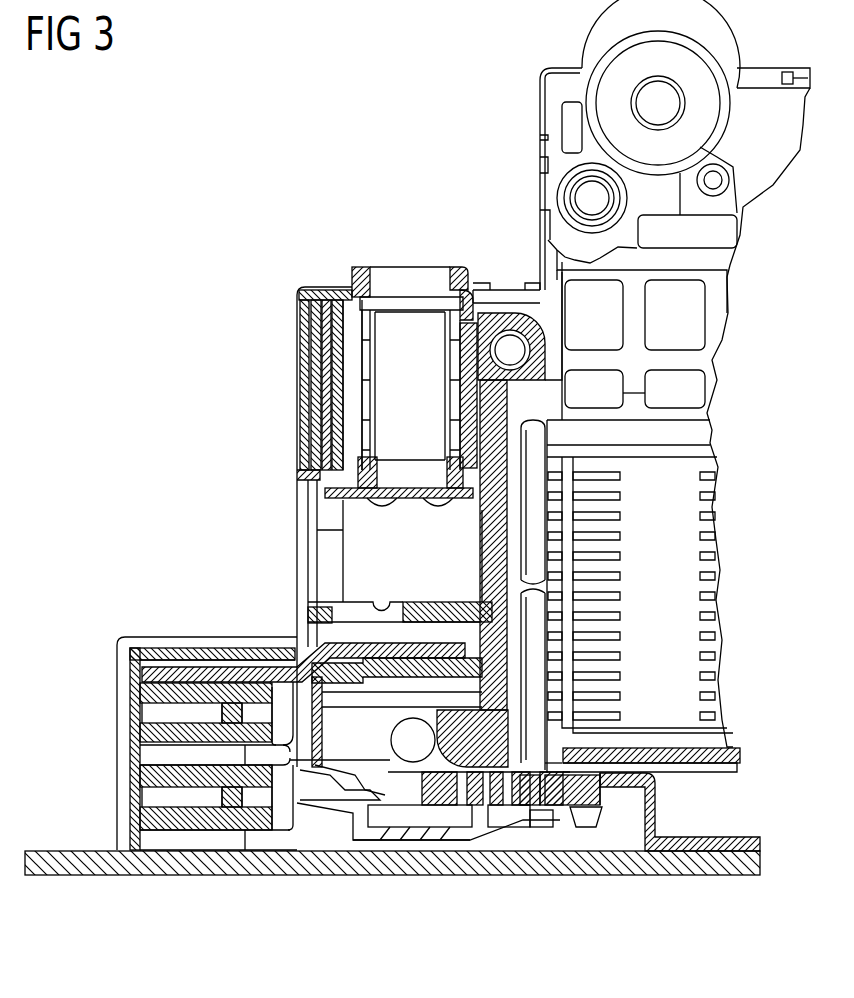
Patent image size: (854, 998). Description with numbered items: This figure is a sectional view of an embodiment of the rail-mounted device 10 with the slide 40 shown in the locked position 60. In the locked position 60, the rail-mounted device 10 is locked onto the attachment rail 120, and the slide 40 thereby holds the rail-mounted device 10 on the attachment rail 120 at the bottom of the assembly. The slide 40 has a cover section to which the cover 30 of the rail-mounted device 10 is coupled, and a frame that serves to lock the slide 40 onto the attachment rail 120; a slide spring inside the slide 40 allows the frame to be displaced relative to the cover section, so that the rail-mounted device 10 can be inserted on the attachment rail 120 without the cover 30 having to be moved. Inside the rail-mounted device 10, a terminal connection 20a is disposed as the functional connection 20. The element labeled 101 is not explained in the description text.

The rail-mounted device 10 is at (331, 84).
The functional connection 20 is at (433, 673).
The terminal connection 20a is at (397, 670).
The cover 30 is at (305, 368).
The slide 40 is at (567, 810).
The locked position 60 is at (533, 906).
The connecting plate 101 is at (388, 647).
The attachment rail 120 is at (652, 805).